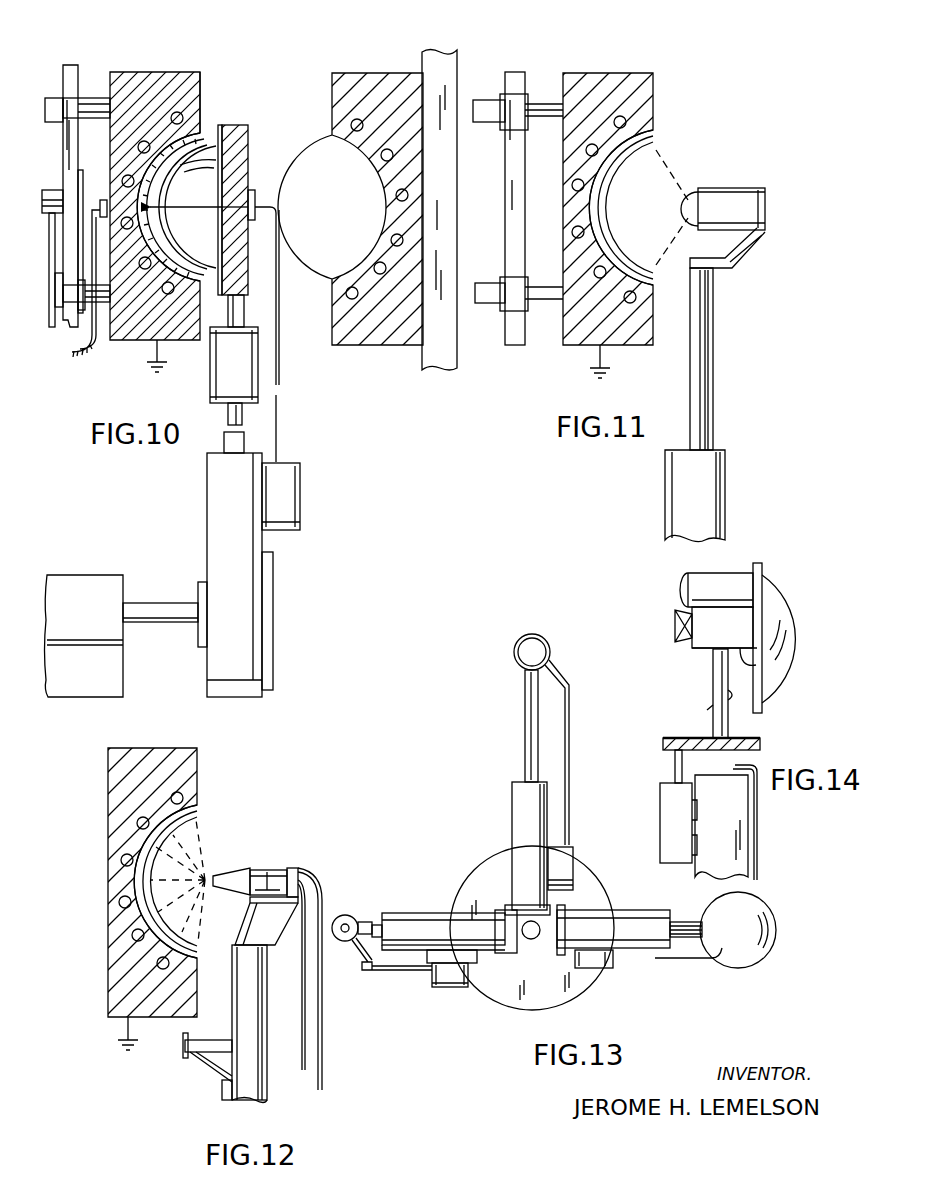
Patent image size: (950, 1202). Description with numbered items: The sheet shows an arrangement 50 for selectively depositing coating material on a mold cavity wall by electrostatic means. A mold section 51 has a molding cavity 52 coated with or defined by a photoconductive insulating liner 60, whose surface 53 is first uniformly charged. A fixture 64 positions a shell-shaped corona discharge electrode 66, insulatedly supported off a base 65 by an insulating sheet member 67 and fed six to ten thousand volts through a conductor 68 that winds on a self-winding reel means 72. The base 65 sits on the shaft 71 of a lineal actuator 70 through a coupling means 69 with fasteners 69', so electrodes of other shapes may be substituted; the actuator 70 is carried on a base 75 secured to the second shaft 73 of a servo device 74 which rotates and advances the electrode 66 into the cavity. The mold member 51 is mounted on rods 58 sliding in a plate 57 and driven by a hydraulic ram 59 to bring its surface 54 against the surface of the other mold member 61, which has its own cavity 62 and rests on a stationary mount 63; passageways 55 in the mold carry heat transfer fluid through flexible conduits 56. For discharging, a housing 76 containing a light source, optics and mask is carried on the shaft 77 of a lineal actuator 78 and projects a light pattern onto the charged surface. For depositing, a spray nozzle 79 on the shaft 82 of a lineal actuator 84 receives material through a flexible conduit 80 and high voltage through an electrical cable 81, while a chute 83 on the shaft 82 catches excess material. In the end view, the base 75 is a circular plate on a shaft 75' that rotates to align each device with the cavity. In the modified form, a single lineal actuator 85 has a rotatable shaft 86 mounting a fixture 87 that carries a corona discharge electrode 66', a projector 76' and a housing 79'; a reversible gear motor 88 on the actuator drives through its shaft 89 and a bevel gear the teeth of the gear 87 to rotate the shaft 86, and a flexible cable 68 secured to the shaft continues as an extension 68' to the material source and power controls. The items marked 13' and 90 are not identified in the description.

In FIG. 10, the molding apparatus 50 is at (270, 52).
In FIG. 10, the mold section 51 is at (150, 78).
In FIG. 11, the mold section 51 is at (586, 345).
In FIG. 12, the mold section 51 is at (118, 812).
In FIG. 10, the molding cavity 52 is at (201, 140).
In FIG. 11, the molding cavity 52 is at (657, 152).
In FIG. 10, the surface of the mold cavity wall 53 is at (186, 178).
In FIG. 10, the mold surface 54 is at (200, 74).
In FIG. 10, the passageways 55 is at (168, 294).
In FIG. 10, the flexible conduits 56 is at (93, 350).
In FIG. 10, the plate 57 is at (73, 66).
In FIG. 10, the rods 58 is at (92, 99).
In FIG. 10, the hydraulic ram 59 is at (62, 322).
In FIG. 10, the liner 60 is at (204, 128).
In FIG. 11, the liner 60 is at (657, 131).
In FIG. 12, the liner 60 is at (190, 826).
In FIG. 11, the mold member 61 is at (382, 345).
In FIG. 11, the cavity of mold member 61 62 is at (346, 273).
In FIG. 11, the stationary mount 63 is at (331, 92).
In FIG. 10, the fixture 64 is at (256, 200).
In FIG. 10, the base 65 is at (240, 152).
In FIG. 10, the electrode 66 is at (187, 207).
In FIG. 13, the electrode 66 is at (755, 930).
In FIG. 10, the insulating sheet member 67 is at (232, 178).
In FIG. 10, the conductor 68 is at (284, 325).
In FIG. 14, the conductor 68 is at (704, 707).
In FIG. 13, the conductor 68 is at (688, 969).
In FIG. 10, the coupling means 69 is at (266, 349).
In FIG. 10, the fasteners 69' is at (196, 394).
In FIG. 10, the lineal actuator 70 is at (234, 575).
In FIG. 13, the lineal actuator 70 is at (612, 918).
In FIG. 10, the shaft 71 is at (224, 427).
In FIG. 10, the self-winding reel means 72 is at (290, 476).
In FIG. 13, the self-winding reel means 72 is at (573, 861).
In FIG. 10, the second shaft 73 is at (176, 612).
In FIG. 10, the servo device 74 is at (80, 581).
In FIG. 10, the base 75 is at (290, 621).
In FIG. 13, the base 75 is at (532, 949).
In FIG. 10, the shaft 75' is at (84, 680).
In FIG. 11, the housing 76 is at (726, 208).
In FIG. 13, the housing 76 is at (547, 734).
In FIG. 14, the projector 76' is at (718, 619).
In FIG. 11, the shaft 77 is at (707, 300).
In FIG. 11, the lineal actuator 78 is at (706, 478).
In FIG. 13, the lineal actuator 78 is at (516, 796).
In FIG. 12, the spray nozzle 79 is at (259, 857).
In FIG. 13, the spray nozzle 79 is at (382, 923).
In FIG. 14, the housing 79' is at (667, 640).
In FIG. 12, the flexible conduit 80 is at (321, 886).
In FIG. 12, the flexible electrical cable 81 is at (308, 1030).
In FIG. 12, the shaft 82 is at (255, 1060).
In FIG. 13, the shaft 82 is at (383, 914).
In FIG. 12, the chute 83 is at (212, 1050).
In FIG. 13, the lineal actuator 84 is at (444, 931).
In FIG. 14, the lineal actuator 85 is at (721, 827).
In FIG. 14, the shaft 86 is at (714, 672).
In FIG. 14, the fixture 87 is at (763, 570).
In FIG. 14, the reversible gear motor 88 is at (665, 815).
In FIG. 14, the shaft 89 is at (675, 775).
In FIG. 14, the plate surface 90 is at (668, 745).
In FIG. 12, the coating 13' is at (195, 869).
In FIG. 14, the corona discharge electrode 66' is at (796, 634).
In FIG. 14, the cable extension 68' is at (772, 822).